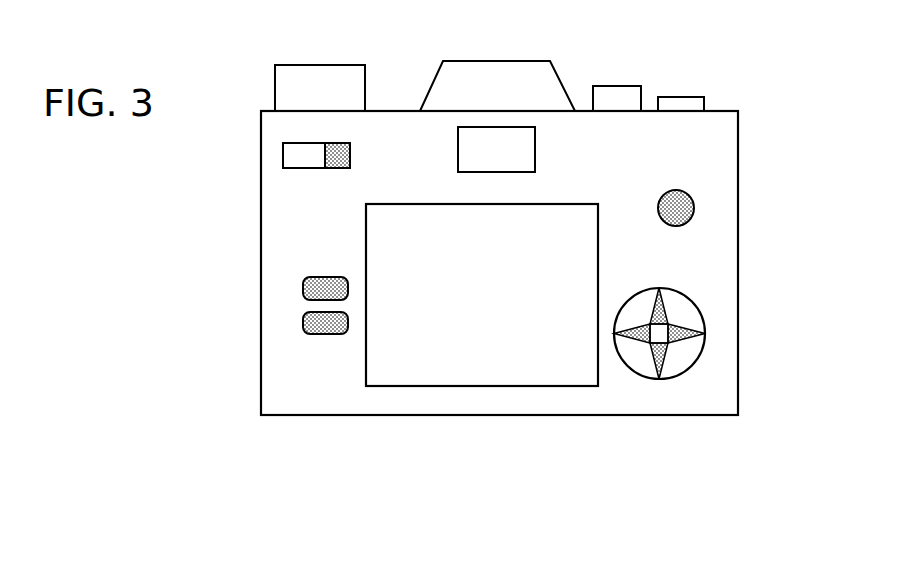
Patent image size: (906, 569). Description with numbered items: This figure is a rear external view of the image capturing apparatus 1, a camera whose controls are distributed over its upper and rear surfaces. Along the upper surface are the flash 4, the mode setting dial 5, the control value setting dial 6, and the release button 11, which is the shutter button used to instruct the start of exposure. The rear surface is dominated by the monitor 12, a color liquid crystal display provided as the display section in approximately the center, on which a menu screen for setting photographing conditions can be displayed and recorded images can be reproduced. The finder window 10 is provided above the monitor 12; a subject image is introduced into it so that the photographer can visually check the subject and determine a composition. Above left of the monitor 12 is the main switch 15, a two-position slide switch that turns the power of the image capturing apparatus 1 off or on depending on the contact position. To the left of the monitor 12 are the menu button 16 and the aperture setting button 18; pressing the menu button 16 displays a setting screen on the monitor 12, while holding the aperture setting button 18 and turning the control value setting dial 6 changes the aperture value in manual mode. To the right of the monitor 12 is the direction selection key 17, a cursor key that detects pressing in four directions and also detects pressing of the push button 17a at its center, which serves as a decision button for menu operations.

The image capturing apparatus 1 is at (162, 160).
The flash 4 is at (497, 61).
The mode setting dial 5 is at (275, 87).
The control value setting dial 6 is at (618, 86).
The finder window 10 is at (535, 148).
The release button 11 is at (683, 97).
The monitor 12 is at (484, 386).
The main switch 15 is at (308, 168).
The menu button 16 is at (303, 291).
The direction selection key 17 is at (710, 372).
The push button 17a is at (672, 340).
The aperture setting button 18 is at (303, 323).